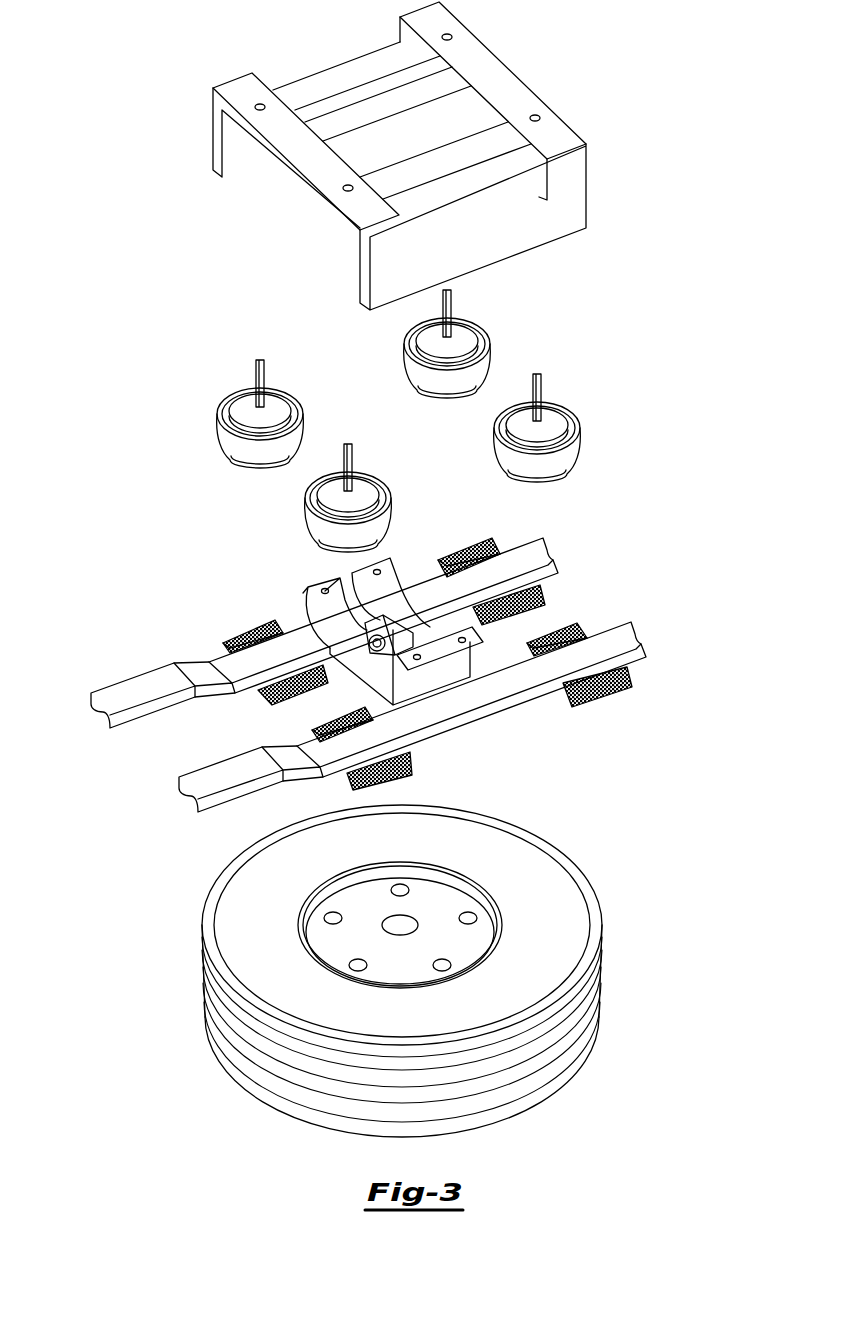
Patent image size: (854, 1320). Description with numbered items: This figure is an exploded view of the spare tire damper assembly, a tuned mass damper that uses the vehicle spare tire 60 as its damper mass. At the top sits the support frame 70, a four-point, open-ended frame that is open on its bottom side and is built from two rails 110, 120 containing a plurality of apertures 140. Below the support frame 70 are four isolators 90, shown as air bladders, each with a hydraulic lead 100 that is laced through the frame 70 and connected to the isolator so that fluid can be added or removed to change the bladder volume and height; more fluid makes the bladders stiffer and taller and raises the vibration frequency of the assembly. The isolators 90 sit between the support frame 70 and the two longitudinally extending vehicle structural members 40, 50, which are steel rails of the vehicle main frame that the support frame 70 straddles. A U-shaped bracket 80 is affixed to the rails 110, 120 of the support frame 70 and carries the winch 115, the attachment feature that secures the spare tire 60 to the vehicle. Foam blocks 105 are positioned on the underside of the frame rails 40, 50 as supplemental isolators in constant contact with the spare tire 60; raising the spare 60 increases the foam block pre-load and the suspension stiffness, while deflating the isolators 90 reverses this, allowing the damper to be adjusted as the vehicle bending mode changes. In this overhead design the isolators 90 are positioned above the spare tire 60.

The vehicle structural member 40 is at (142, 678).
The vehicle structural member 50 is at (232, 764).
The spare tire 60 is at (600, 1004).
The support frame 70 is at (432, 155).
The bracket 80 is at (400, 654).
The isolator 90 is at (480, 368).
The hydraulic lead 100 is at (451, 310).
The foam block 105 is at (470, 553).
The rail 110 is at (355, 70).
The winch 115 is at (307, 597).
The rail 120 is at (445, 165).
The aperture 140 is at (256, 106).